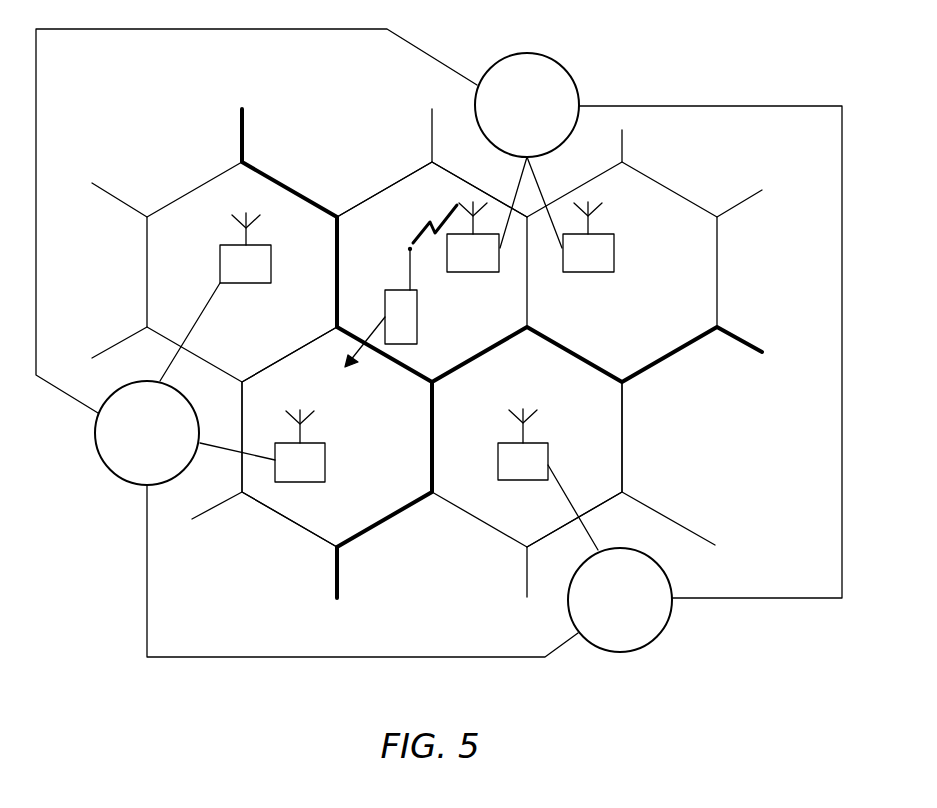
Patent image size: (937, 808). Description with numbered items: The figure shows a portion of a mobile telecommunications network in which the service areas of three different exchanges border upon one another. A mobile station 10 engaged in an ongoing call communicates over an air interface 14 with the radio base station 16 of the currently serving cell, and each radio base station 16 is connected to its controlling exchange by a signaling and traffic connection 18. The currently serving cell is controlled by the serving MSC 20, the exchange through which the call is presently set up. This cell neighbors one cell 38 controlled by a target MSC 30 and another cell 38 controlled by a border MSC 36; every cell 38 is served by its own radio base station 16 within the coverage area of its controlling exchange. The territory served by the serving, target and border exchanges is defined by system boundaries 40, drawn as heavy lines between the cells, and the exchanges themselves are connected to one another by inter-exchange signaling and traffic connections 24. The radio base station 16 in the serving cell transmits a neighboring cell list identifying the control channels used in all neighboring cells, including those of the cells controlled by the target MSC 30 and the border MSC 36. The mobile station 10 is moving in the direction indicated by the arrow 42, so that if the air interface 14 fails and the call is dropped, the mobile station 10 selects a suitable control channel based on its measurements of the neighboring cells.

The mobile station 10 is at (385, 290).
The air interface 14 is at (425, 232).
The radio base station 16 is at (248, 283).
The signaling and traffic connection 18 is at (518, 186).
The serving MSC 20 is at (556, 58).
The inter-exchange signaling and traffic connections 24 is at (248, 30).
The target MSC 30 is at (112, 475).
The border MSC 36 is at (570, 618).
The cell 38 is at (181, 232).
The system boundaries 40 is at (280, 177).
The arrow indicating direction of movement 42 is at (357, 352).